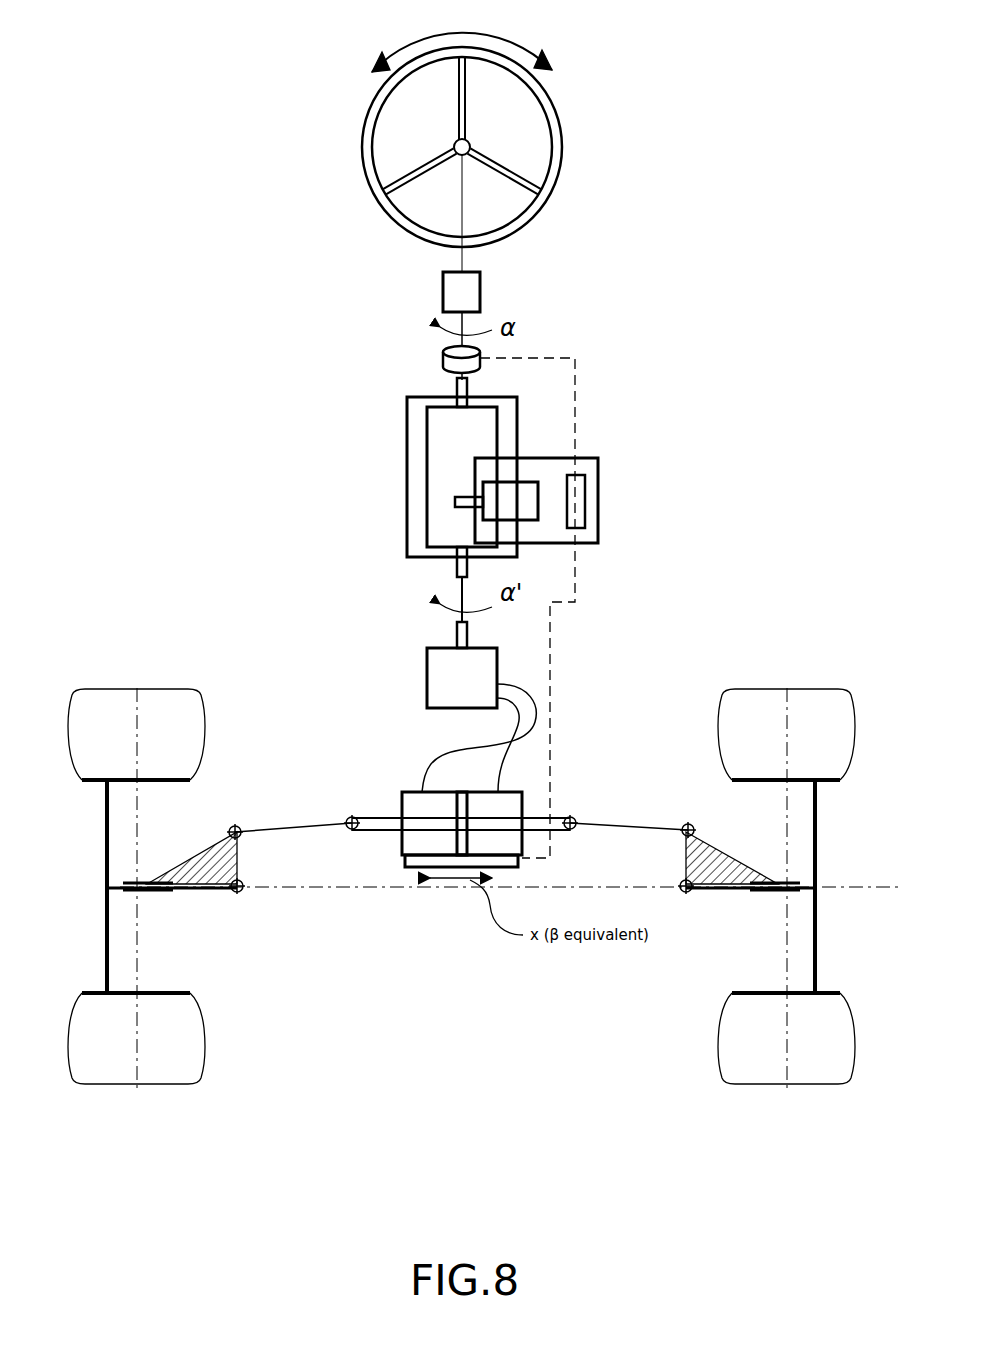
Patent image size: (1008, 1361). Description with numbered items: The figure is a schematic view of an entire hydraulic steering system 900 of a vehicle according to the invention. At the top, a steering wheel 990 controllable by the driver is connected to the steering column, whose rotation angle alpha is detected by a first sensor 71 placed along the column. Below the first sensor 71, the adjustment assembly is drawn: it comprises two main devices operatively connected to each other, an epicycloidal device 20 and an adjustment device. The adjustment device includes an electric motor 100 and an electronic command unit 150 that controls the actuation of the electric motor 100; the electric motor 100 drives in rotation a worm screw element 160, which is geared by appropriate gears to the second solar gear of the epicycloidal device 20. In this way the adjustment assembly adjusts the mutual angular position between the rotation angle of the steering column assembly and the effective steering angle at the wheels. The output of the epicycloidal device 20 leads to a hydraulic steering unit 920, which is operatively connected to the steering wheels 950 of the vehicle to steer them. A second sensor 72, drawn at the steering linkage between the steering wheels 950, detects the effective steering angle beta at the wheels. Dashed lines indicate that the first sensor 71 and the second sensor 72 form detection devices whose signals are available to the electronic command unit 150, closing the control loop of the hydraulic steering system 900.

The steering wheel 990 is at (348, 135).
The hydraulic steering system 900 is at (640, 228).
The first sensor 71 is at (442, 350).
The epicycloidal device 20 is at (462, 477).
The electric motor 100 is at (510, 501).
The electronic command unit 150 is at (598, 502).
The worm screw element 160 is at (456, 503).
The hydraulic steering unit 920 is at (479, 707).
The second sensor 72 is at (405, 868).
The steering wheels 950 is at (187, 1043).